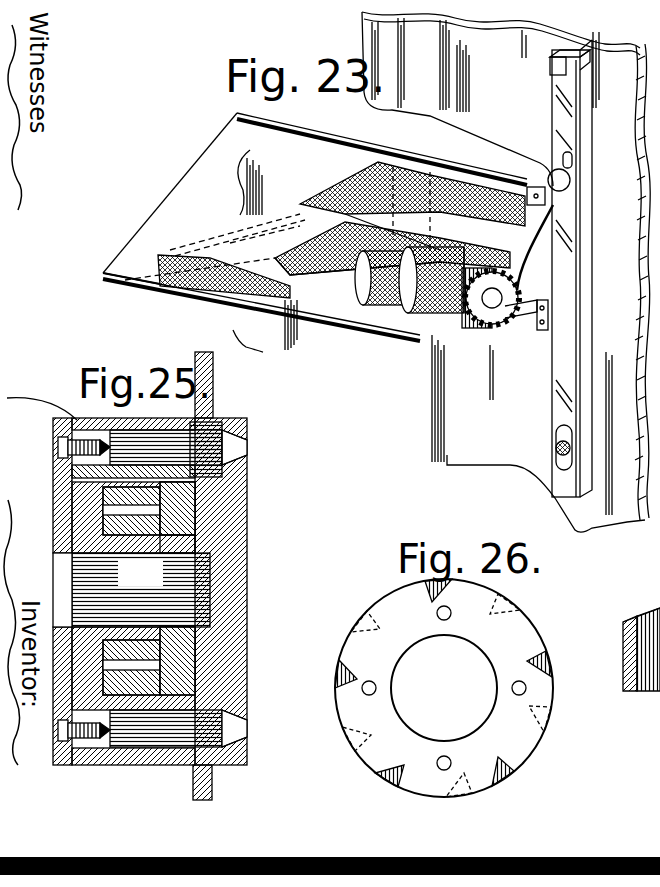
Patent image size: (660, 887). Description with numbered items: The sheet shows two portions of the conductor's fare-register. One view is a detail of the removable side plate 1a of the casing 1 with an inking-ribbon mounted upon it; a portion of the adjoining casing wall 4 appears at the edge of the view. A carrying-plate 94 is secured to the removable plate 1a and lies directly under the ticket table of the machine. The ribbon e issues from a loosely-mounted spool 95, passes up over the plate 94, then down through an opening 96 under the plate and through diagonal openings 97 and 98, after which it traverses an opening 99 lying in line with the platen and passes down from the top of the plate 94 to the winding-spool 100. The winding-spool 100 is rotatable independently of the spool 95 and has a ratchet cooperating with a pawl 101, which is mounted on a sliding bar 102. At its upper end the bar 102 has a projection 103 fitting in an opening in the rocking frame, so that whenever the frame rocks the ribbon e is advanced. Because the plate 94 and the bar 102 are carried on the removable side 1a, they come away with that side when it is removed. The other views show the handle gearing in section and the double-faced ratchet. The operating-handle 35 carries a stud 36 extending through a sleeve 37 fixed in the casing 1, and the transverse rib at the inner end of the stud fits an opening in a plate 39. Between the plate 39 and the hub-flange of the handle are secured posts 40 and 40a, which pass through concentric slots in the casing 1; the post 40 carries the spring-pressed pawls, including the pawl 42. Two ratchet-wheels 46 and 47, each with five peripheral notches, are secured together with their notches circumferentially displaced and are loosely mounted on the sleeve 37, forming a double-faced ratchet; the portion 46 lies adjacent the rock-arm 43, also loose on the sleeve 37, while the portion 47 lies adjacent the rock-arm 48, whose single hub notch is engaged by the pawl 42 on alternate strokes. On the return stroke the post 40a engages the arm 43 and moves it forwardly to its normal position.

In FIG. 23, the carrying-plate 94 is at (150, 262).
In FIG. 23, the spool 95 is at (365, 292).
In FIG. 23, the opening 96 is at (300, 203).
In FIG. 23, the diagonal opening 97 is at (153, 282).
In FIG. 23, the diagonal opening 98 is at (230, 298).
In FIG. 23, the opening 99 is at (295, 250).
In FIG. 23, the winding-spool 100 is at (472, 322).
In FIG. 23, the pawl 101 is at (527, 302).
In FIG. 23, the sliding bar 102 is at (560, 390).
In FIG. 23, the projection 103 is at (548, 68).
In FIG. 23, the ribbon e is at (340, 183).
In FIG. 23, the removable side plate 1a is at (621, 209).
In FIG. 23, the frame wall 4 is at (655, 309).
In FIG. 25, the casing 1 is at (215, 393).
In FIG. 25, the pawl 42 is at (215, 425).
In FIG. 25, the post 40 is at (235, 446).
In FIG. 25, the operating-handle 35 is at (243, 500).
In FIG. 25, the rock-arm 48 is at (185, 520).
In FIG. 25, the sleeve 37 is at (230, 553).
In FIG. 25, the plate 39 is at (53, 498).
In FIG. 25, the stud 36 is at (131, 590).
In FIG. 25, the ratchet-wheel 47 is at (165, 656).
In FIG. 26, the ratchet-wheel 47 is at (528, 738).
In FIG. 25, the ratchet-wheel 46 is at (165, 688).
In FIG. 26, the ratchet-wheel 46 is at (395, 777).
In FIG. 25, the post 40a is at (100, 748).
In FIG. 25, the rock-arm 43 is at (115, 720).